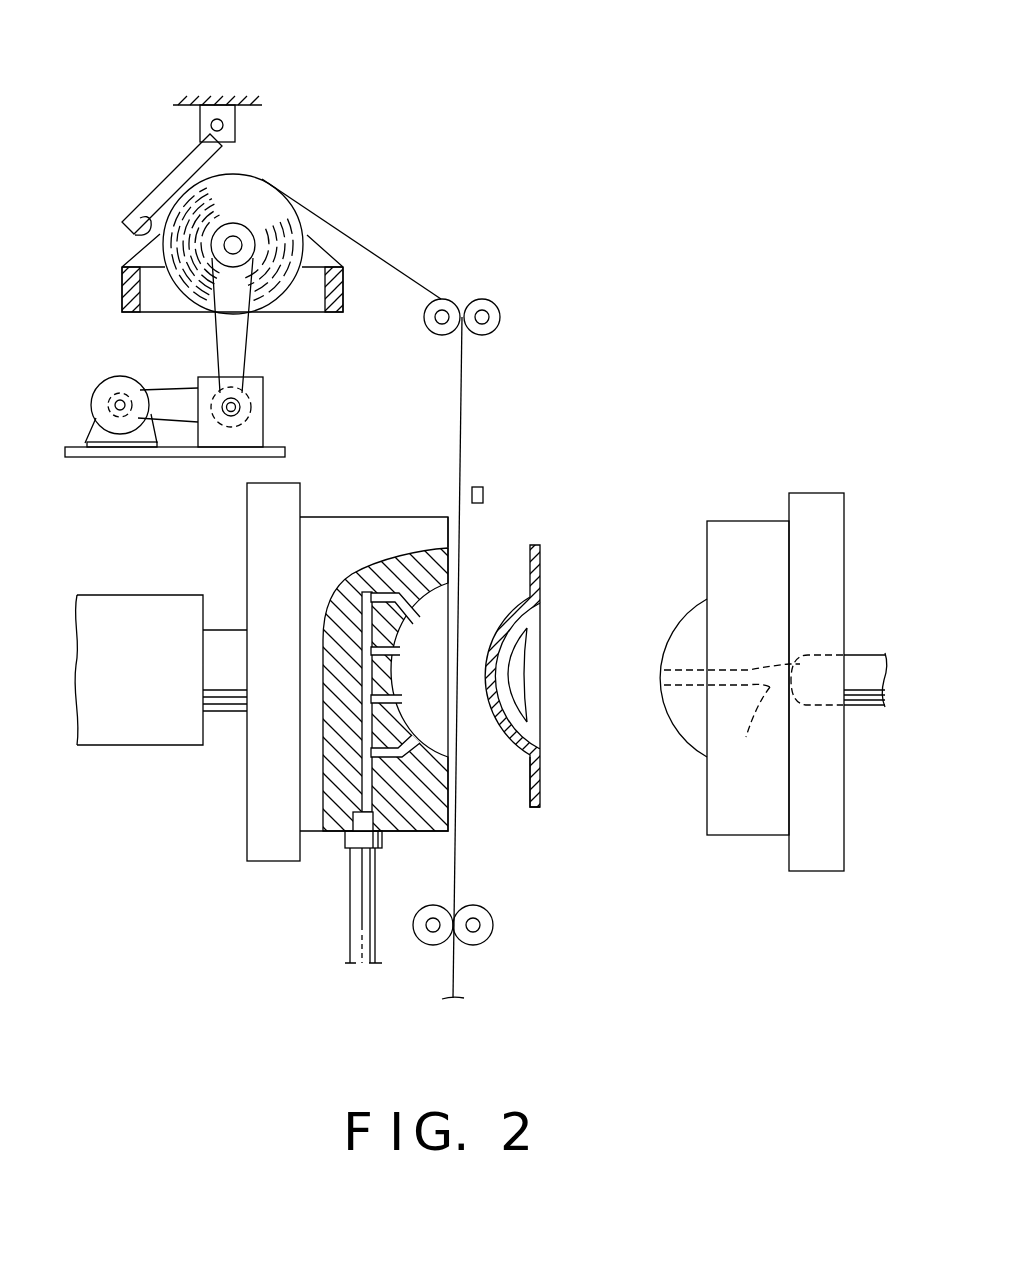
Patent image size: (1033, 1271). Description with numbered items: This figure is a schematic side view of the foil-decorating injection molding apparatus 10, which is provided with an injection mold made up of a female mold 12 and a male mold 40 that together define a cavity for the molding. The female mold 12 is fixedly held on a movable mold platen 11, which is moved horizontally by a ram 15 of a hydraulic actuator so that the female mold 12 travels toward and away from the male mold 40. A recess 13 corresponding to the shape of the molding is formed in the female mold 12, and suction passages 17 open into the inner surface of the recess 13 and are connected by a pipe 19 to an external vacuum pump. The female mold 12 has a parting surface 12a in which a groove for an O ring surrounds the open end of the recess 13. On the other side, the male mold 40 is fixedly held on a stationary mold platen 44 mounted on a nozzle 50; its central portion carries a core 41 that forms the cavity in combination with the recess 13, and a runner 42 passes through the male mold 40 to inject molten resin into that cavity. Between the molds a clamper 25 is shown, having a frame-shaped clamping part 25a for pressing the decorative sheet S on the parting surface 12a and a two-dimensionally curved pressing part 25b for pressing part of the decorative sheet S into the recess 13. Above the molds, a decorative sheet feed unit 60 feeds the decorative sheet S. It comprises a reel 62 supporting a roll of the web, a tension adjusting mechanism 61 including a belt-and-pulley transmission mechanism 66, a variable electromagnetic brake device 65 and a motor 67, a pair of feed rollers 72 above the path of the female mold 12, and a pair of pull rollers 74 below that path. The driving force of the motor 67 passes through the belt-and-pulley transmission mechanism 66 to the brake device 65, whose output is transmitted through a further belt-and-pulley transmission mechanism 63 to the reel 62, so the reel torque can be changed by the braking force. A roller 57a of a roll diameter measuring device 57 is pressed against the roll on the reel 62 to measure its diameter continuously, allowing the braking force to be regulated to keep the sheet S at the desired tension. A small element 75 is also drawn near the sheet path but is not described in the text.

The foil-decorating injection molding apparatus 10 is at (157, 58).
The movable mold platen 11 is at (253, 817).
The female mold 12 is at (333, 528).
The parting surface 12a is at (451, 522).
The recess 13 is at (407, 725).
The ram 15 is at (227, 713).
The suction passages 17 is at (352, 812).
The pipe 19 is at (357, 922).
The clamper 25 is at (559, 680).
The frame-shaped clamping part 25a is at (540, 777).
The two-dimensionally curved pressing part 25b is at (502, 677).
The male mold 40 is at (748, 534).
The core 41 is at (679, 709).
The runner 42 is at (753, 713).
The stationary mold platen 44 is at (817, 860).
The nozzle 50 is at (863, 707).
The roll diameter measuring device 57 is at (151, 172).
The roller 57a is at (136, 235).
The decorative sheet feed unit 60 is at (382, 210).
The tension adjusting mechanism 61 is at (98, 304).
The reel 62 is at (242, 230).
The belt-and-pulley transmission mechanism 63 is at (248, 349).
The variable electromagnetic brake device 65 is at (257, 407).
The belt-and-pulley transmission mechanism 66 is at (168, 390).
The motor 67 is at (100, 393).
The feed rollers 72 is at (478, 300).
The pull rollers 74 is at (485, 937).
The sensor 75 is at (483, 493).
The decorative sheet S is at (462, 418).